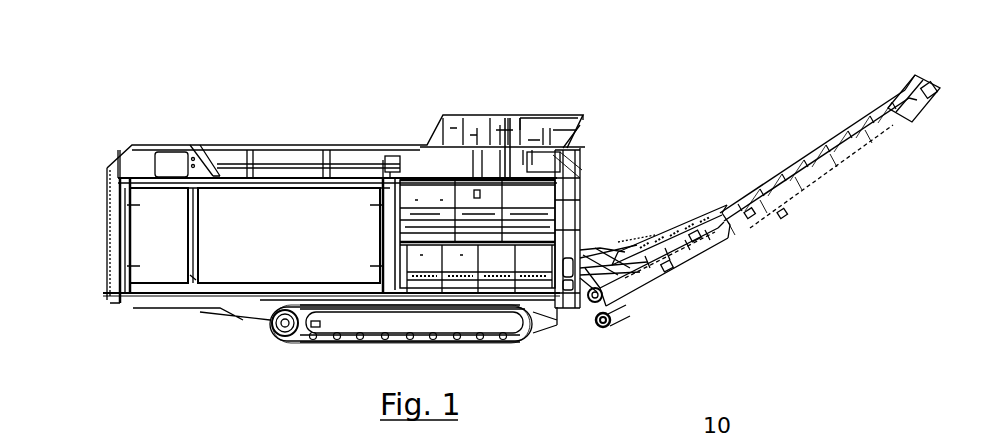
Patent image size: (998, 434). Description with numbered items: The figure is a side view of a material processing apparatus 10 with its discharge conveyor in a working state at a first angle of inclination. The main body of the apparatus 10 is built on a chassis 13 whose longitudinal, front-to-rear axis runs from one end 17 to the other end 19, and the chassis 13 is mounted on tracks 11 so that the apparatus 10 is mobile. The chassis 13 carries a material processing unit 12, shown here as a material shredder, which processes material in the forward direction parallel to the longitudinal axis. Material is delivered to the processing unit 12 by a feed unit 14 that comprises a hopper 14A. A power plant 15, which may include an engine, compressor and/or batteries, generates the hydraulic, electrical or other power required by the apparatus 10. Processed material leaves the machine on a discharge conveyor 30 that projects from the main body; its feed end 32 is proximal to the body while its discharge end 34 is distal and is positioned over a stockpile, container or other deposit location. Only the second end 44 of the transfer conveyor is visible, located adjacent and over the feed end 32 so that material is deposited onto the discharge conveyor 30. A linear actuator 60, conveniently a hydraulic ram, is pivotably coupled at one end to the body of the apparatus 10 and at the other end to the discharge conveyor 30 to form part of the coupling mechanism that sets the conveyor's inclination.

The material processing apparatus 10 is at (682, 103).
The tracks 11 is at (280, 340).
The material processing unit 12 is at (436, 192).
The chassis 13 is at (246, 320).
The feed unit 14 is at (490, 112).
The hopper 14A is at (538, 121).
The power plant 15 is at (277, 205).
The end 17 is at (563, 315).
The end 19 is at (130, 303).
The discharge conveyor 30 is at (872, 143).
The feed end 32 is at (618, 322).
The discharge end 34 is at (921, 73).
The second end 44 is at (592, 304).
The linear actuator 60 is at (604, 254).